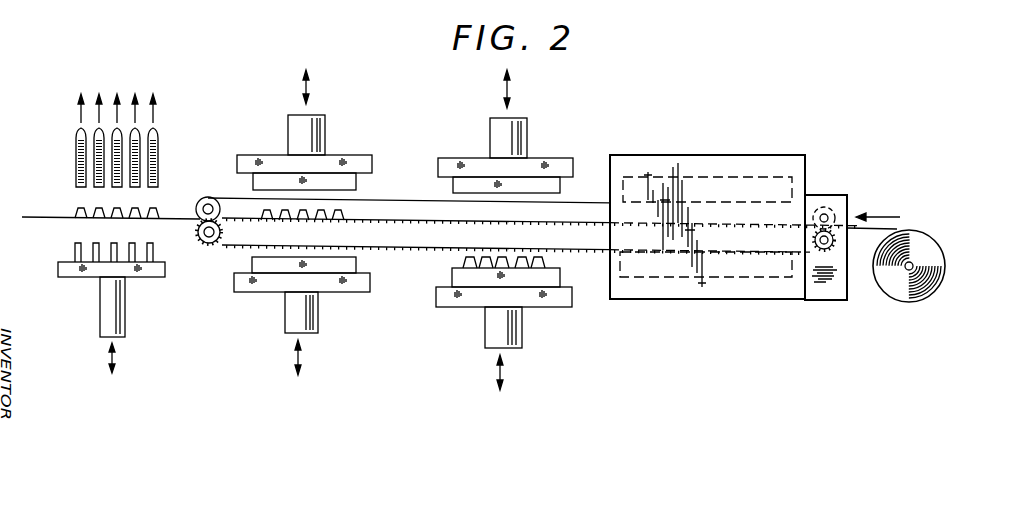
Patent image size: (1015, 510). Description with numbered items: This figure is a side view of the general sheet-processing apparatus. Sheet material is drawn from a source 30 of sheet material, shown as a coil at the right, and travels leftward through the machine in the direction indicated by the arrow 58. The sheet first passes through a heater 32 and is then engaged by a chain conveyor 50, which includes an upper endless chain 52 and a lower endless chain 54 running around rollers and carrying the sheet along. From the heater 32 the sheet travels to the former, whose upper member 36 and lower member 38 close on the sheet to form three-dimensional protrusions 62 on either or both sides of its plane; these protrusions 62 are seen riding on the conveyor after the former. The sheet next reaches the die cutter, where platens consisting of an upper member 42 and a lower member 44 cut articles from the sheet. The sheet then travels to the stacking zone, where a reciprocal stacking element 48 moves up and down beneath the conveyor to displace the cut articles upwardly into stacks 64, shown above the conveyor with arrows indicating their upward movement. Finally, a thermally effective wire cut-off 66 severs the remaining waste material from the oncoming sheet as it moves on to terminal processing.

The source of sheet material 30 is at (944, 254).
The heater 32 is at (752, 304).
The upper member of former 36 is at (566, 155).
The lower member of former 38 is at (539, 313).
The upper member of die cutter 42 is at (348, 151).
The lower member of die cutter 44 is at (336, 298).
The reciprocal stacking element 48 is at (145, 282).
The chain conveyor 50 is at (428, 195).
The upper endless chain 52 is at (226, 192).
The lower endless chain 54 is at (236, 251).
The arrow 58 is at (882, 213).
The three-dimensional protrusions 62 is at (351, 206).
The stacks 64 is at (157, 151).
The thermally effective wire cut-off 66 is at (29, 230).